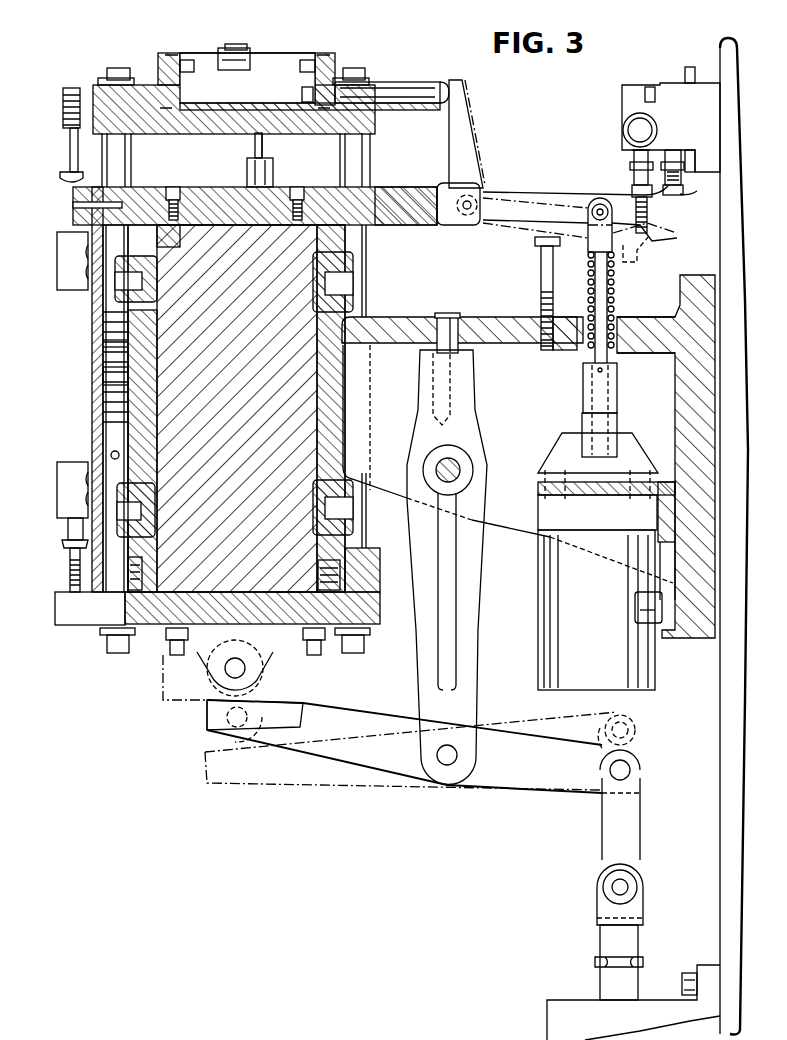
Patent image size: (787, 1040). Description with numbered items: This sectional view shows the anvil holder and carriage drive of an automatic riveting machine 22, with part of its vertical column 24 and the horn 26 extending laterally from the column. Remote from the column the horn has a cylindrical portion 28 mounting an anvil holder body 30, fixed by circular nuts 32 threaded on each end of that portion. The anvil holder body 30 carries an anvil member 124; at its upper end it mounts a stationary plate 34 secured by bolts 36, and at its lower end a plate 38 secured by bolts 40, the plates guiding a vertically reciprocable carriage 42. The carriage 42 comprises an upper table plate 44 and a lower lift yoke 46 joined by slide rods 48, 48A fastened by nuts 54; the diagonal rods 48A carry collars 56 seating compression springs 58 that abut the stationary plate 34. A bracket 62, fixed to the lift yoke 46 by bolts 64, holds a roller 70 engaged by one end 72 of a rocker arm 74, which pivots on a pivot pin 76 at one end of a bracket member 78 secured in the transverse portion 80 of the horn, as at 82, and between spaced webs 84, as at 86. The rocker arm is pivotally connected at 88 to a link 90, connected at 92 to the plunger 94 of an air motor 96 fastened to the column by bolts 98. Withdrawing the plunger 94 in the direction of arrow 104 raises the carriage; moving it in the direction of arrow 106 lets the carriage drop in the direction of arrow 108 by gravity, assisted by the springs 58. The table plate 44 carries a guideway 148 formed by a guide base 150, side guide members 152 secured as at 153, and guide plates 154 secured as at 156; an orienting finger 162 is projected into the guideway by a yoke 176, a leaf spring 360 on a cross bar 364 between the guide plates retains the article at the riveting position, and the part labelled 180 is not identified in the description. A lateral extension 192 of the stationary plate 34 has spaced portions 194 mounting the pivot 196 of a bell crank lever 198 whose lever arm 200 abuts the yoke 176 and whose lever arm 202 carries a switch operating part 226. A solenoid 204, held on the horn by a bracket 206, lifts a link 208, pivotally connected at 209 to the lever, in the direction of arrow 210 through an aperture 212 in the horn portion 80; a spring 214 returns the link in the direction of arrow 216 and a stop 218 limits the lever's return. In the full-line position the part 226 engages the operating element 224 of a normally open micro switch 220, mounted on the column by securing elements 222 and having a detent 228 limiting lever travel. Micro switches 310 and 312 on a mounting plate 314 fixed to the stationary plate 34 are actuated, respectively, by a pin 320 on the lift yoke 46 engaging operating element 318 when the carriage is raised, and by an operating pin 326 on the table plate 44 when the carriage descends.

The automatic riveting machine 22 is at (717, 52).
The vertical column 24 is at (720, 241).
The horn 26 is at (672, 315).
The cylindrical portion 28 is at (128, 407).
The anvil holder body 30 is at (240, 371).
The circular nuts 32 is at (112, 300).
The plate or support member 34 is at (216, 186).
The bolts 36 is at (170, 190).
The plate 38 is at (379, 548).
The bolts 40 is at (146, 568).
The carriage assembly 42 is at (377, 122).
The table plate or bracket member 44 is at (264, 140).
The lift yoke 46 is at (378, 622).
The rods 48 is at (368, 150).
The diagonally related rods 48A is at (131, 152).
The nut 54 is at (100, 78).
The collar 56 is at (108, 455).
The compression spring 58 is at (110, 380).
The bracket 62 is at (198, 655).
The bolts 64 is at (168, 642).
The roller 70 is at (212, 678).
The end of rocker arm 72 is at (210, 715).
The rocker arm 74 is at (360, 716).
The pivot pin 76 is at (458, 755).
The bracket member 78 is at (479, 569).
The transverse portion of horn 80 is at (482, 315).
The securing point 82 is at (440, 318).
The webs 84 is at (533, 415).
The securing point 86 is at (440, 462).
The pivotal connection 88 is at (628, 768).
The link 90 is at (600, 830).
The connection 92 is at (630, 883).
The plunger 94 is at (628, 939).
The air motor 96 is at (546, 1021).
The bolts 98 is at (688, 973).
The arrow 104 is at (652, 825).
The arrow 106 is at (578, 889).
The arrow 108 is at (52, 95).
The anvil member 124 is at (254, 151).
The guideway 148 is at (248, 88).
The guide base 150 is at (230, 104).
The guide members 152 is at (190, 70).
The securing point 153 is at (168, 110).
The guide plates 154 is at (172, 57).
The securing point 156 is at (162, 60).
The orienting finger 162 is at (302, 93).
The yoke 176 is at (448, 85).
The rod 180 is at (426, 82).
The lateral extension 192 is at (425, 187).
The spaced portions 194 is at (445, 222).
The pivot 196 is at (465, 216).
The bell crank lever 198 is at (500, 214).
The lever arm 200 is at (470, 118).
The lever arm 202 is at (547, 200).
The solenoid 204 is at (603, 583).
The bracket 206 is at (668, 500).
The link 208 is at (600, 342).
The pivotal connection 209 is at (588, 212).
The arrow 210 is at (573, 300).
The aperture 212 is at (612, 365).
The spring 214 is at (614, 338).
The arrow 216 is at (622, 284).
The stop 218 is at (538, 258).
The micro switch 220 is at (705, 111).
The securing elements 222 is at (688, 66).
The operating element 224 is at (632, 160).
The switch operating part 226 is at (632, 190).
The detent 228 is at (684, 196).
The lower micro switch 310 is at (61, 496).
The upper micro switch 312 is at (61, 273).
The mounting plate 314 is at (103, 345).
The operating element 318 is at (68, 528).
The pin 320 is at (70, 555).
The operating pin 326 is at (68, 157).
The leaf spring 360 is at (236, 46).
The cross bar 364 is at (271, 53).